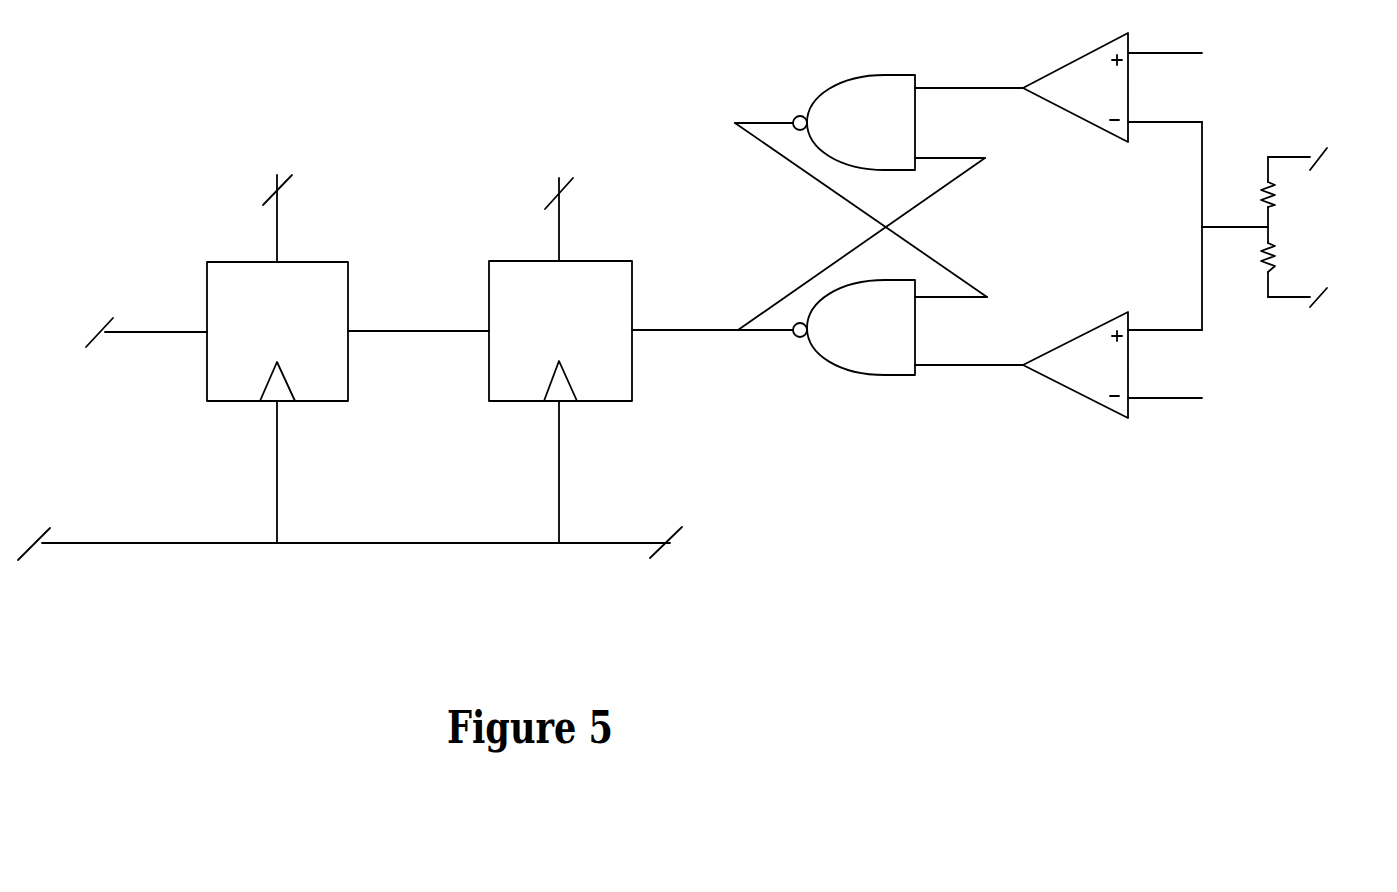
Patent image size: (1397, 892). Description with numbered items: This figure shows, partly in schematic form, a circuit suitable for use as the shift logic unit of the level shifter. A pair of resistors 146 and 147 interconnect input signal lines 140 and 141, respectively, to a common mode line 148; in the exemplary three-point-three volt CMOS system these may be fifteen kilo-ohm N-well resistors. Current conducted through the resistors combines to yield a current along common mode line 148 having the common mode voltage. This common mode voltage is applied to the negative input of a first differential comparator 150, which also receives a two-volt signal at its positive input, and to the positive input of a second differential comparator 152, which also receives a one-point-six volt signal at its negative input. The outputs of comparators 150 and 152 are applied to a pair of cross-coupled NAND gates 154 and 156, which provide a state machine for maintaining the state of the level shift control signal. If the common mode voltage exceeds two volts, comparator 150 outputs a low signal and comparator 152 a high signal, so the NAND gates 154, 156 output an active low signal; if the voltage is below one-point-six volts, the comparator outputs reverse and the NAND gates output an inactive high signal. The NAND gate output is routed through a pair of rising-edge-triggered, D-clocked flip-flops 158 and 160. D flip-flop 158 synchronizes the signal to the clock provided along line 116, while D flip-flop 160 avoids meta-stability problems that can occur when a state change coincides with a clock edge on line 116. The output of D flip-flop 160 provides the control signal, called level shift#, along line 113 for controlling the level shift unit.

The line 113 is at (172, 333).
The line 116 is at (102, 543).
The input signal line 140 is at (1298, 157).
The input signal line 141 is at (1298, 297).
The resistor 146 is at (1295, 204).
The resistor 147 is at (1295, 246).
The common mode line 148 is at (1202, 307).
The first differential comparator 150 is at (1117, 36).
The second differential comparator 152 is at (1117, 407).
The NAND gate 154 is at (903, 86).
The NAND gate 156 is at (907, 370).
The D flip-flop 158 is at (624, 264).
The D flip-flop 160 is at (348, 262).